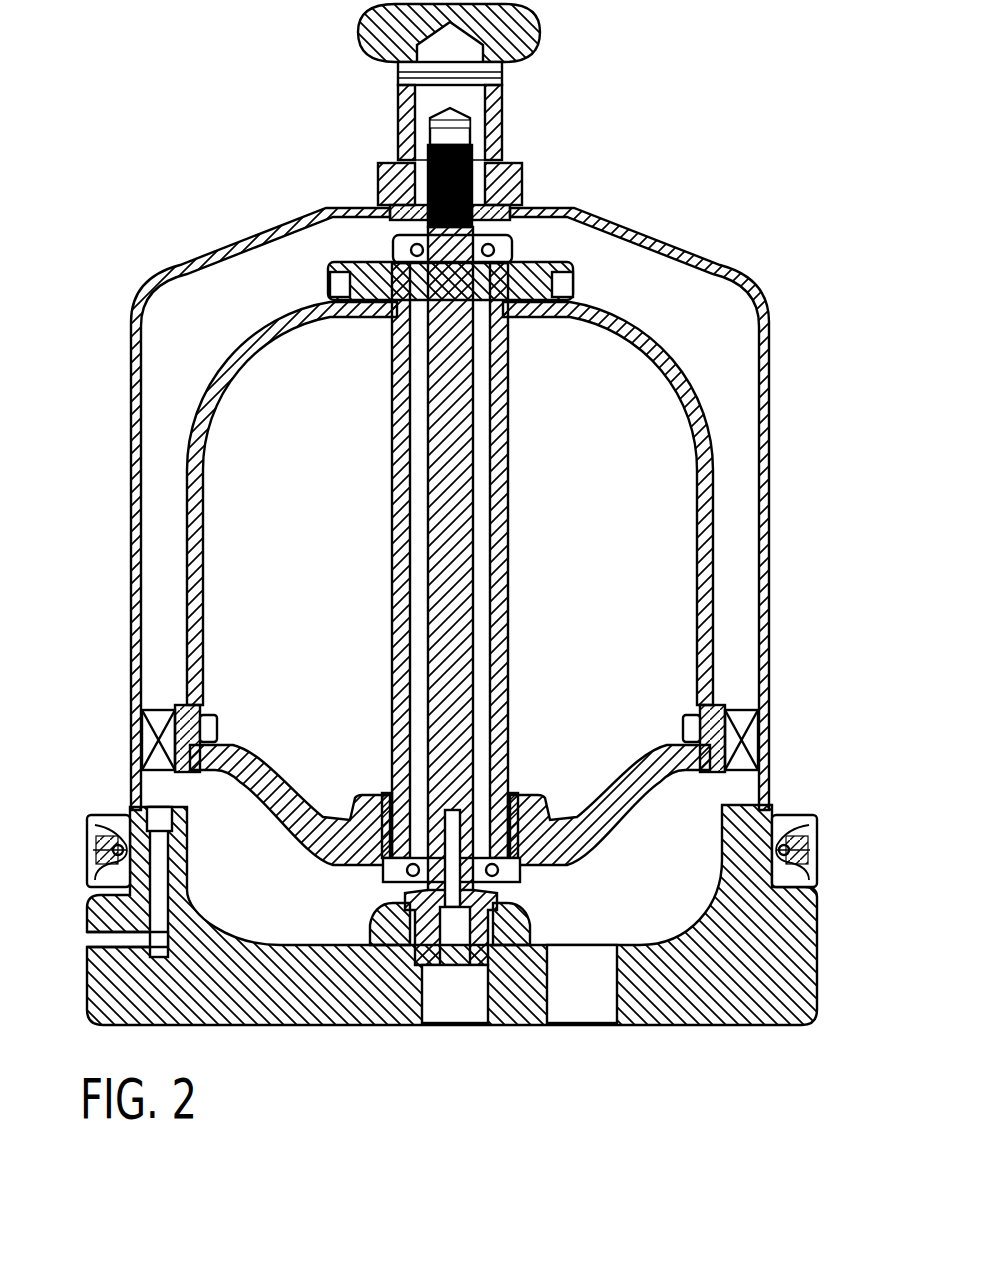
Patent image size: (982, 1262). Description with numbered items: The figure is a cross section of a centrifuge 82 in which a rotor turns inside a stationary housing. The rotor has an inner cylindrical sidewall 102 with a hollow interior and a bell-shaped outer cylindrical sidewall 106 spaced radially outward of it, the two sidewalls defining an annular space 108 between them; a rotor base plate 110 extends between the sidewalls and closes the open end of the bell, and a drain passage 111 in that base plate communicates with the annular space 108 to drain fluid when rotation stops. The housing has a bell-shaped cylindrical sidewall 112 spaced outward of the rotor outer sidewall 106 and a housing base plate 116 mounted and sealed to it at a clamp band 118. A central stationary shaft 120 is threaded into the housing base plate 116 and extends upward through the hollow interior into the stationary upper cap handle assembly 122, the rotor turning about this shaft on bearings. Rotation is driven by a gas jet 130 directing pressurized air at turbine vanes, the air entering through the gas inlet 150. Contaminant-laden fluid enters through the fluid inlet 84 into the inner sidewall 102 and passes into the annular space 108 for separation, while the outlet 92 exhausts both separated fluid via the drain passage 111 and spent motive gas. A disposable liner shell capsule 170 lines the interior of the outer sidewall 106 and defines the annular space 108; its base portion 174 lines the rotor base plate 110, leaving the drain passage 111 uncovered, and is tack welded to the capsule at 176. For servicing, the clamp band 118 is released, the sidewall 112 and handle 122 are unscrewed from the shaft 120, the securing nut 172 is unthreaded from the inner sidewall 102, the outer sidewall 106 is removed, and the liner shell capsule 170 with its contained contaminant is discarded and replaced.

The centrifuge 82 is at (128, 279).
The inlet 84 is at (423, 1023).
The outlet 92 is at (595, 1023).
The inner cylindrical sidewall 102 is at (510, 420).
The outer cylindrical sidewall 106 is at (235, 503).
The annular space 108 is at (697, 578).
The base plate 110 is at (622, 800).
The drain passage 111 is at (545, 858).
The cylindrical sidewall 112 is at (775, 480).
The base plate 116 is at (444, 943).
The clamp band 118 is at (810, 825).
The central stationary shaft 120 is at (480, 375).
The upper cap handle assembly 122 is at (540, 35).
The gas jet 130 is at (128, 803).
The inlet 150 is at (90, 938).
The disposable liner shell capsule 170 is at (186, 588).
The securing nut 172 is at (570, 273).
The base portion 174 is at (222, 763).
The tack weld 176 is at (170, 736).